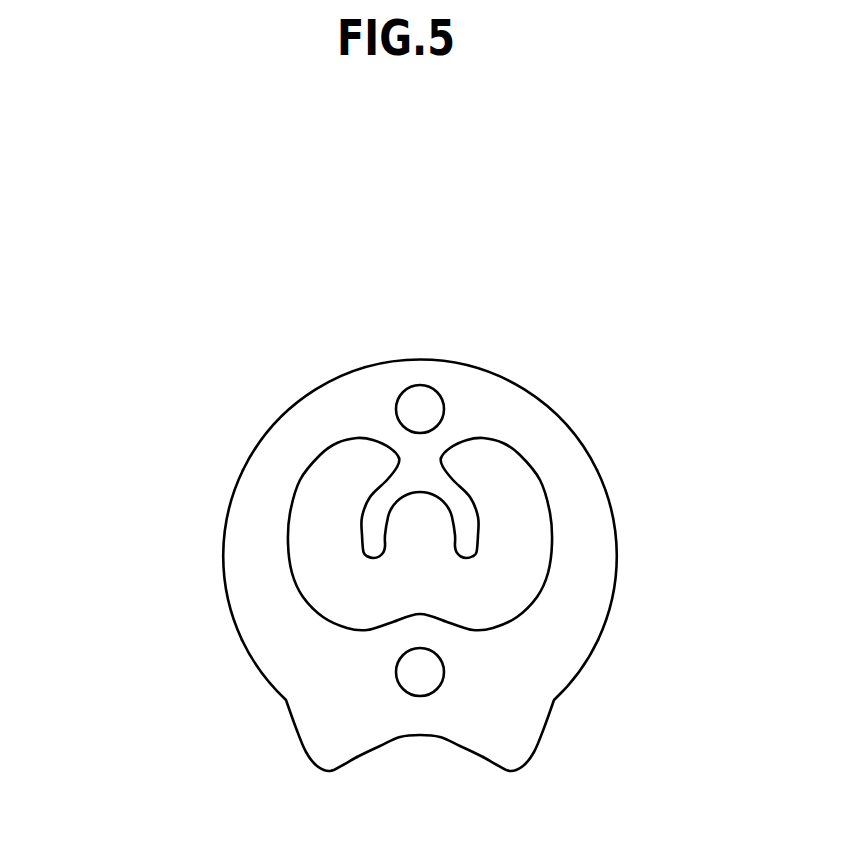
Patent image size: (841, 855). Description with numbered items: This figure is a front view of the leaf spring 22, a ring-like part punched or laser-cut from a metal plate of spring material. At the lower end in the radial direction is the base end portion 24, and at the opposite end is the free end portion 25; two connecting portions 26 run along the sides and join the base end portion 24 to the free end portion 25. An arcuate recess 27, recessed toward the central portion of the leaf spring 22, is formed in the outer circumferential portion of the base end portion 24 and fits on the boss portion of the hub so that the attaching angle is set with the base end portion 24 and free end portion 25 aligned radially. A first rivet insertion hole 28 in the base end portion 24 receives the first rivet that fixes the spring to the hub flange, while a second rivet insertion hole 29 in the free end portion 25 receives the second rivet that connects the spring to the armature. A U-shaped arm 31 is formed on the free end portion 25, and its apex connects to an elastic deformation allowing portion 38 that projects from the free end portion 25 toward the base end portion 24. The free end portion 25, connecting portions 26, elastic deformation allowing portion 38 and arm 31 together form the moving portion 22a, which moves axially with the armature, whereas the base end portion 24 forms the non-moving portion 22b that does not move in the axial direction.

The leaf spring 22 is at (503, 380).
The moving portion 22a is at (108, 362).
The non-moving portion 22b is at (110, 690).
The base end portion 24 is at (364, 688).
The free end portion 25 is at (347, 408).
The connecting portion 26 is at (241, 535).
The arcuate recess 27 is at (407, 737).
The first rivet insertion hole 28 is at (416, 694).
The second rivet insertion hole 29 is at (412, 432).
The arm 31 is at (358, 528).
The elastic deformation allowing portion 38 is at (412, 462).